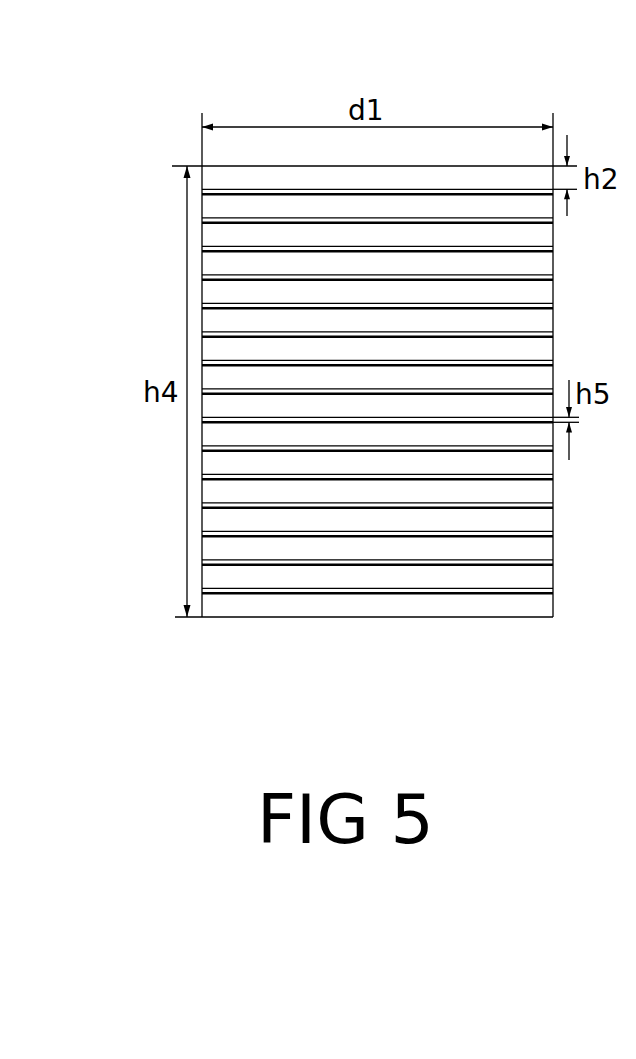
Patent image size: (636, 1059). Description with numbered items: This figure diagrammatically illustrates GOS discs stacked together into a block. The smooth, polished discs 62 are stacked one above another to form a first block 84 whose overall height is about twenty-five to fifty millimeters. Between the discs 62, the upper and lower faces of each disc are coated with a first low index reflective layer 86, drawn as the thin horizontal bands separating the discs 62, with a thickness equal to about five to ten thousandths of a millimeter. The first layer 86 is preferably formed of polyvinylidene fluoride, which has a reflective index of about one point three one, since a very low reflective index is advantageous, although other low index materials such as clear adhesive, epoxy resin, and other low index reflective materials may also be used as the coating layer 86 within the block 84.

The first block 84 is at (203, 92).
The first low index reflective layer 86 is at (265, 563).
The smooth discs 62 is at (463, 578).